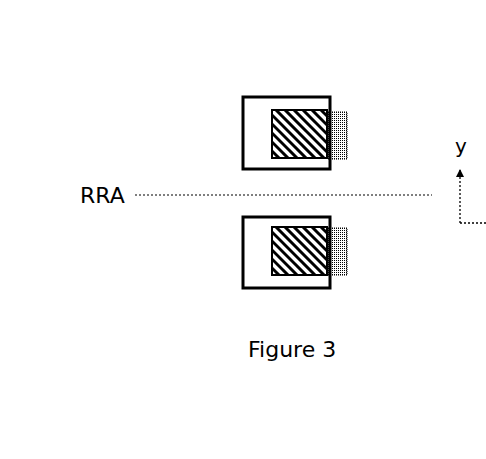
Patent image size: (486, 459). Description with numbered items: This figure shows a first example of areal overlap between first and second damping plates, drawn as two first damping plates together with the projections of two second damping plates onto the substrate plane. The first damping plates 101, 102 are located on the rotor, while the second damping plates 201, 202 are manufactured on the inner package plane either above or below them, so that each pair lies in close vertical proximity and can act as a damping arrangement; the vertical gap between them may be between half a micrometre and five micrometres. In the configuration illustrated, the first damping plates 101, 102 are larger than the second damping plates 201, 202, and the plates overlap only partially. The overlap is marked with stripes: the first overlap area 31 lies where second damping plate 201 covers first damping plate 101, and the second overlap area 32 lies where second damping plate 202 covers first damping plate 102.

The first damping plate 101 is at (242, 128).
The first damping plate 102 is at (242, 260).
The first overlap area 31 is at (302, 125).
The second overlap area 32 is at (293, 258).
The second damping plate 201 is at (349, 137).
The second damping plate 202 is at (349, 250).